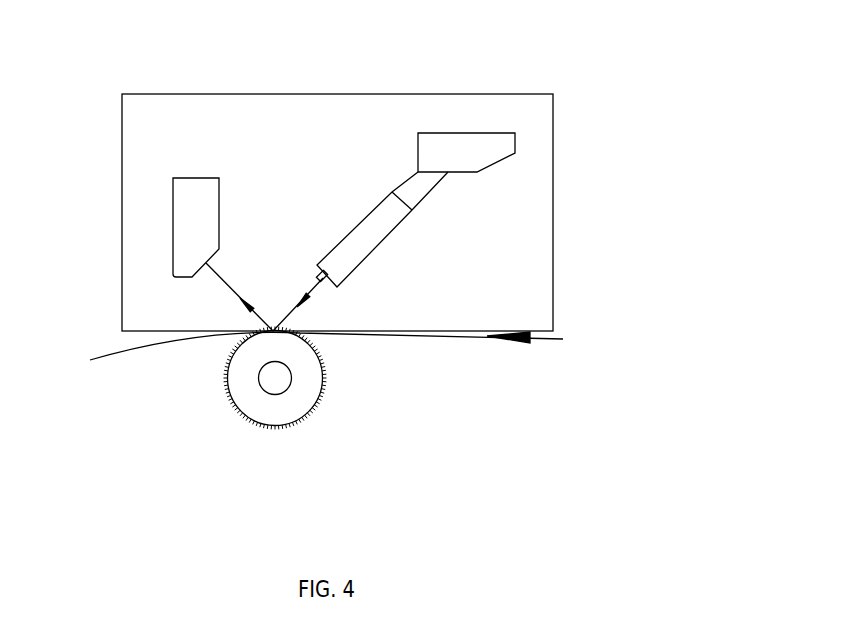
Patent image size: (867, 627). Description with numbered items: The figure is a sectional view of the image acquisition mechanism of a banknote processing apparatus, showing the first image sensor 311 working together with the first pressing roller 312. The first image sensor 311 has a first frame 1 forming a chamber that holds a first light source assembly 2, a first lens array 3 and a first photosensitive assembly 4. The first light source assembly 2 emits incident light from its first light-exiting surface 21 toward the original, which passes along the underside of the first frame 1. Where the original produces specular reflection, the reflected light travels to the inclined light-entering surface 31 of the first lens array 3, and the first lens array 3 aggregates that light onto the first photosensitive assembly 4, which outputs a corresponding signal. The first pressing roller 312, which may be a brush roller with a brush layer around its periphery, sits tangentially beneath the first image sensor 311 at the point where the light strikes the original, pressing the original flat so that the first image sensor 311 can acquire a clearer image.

The first frame 1 is at (122, 213).
The first light source assembly 2 is at (187, 230).
The first light-exiting surface 21 is at (200, 278).
The first lens array 3 is at (387, 227).
The light-entering surface 31 is at (330, 282).
The first image sensor 311 is at (256, 94).
The first pressing roller 312 is at (265, 410).
The first photosensitive assembly 4 is at (440, 150).